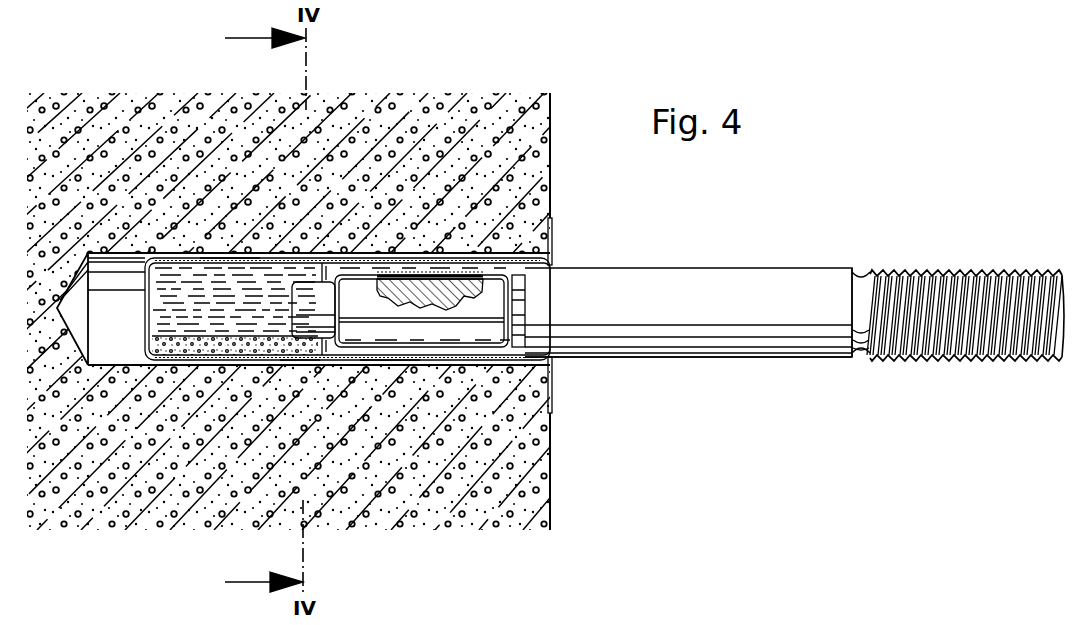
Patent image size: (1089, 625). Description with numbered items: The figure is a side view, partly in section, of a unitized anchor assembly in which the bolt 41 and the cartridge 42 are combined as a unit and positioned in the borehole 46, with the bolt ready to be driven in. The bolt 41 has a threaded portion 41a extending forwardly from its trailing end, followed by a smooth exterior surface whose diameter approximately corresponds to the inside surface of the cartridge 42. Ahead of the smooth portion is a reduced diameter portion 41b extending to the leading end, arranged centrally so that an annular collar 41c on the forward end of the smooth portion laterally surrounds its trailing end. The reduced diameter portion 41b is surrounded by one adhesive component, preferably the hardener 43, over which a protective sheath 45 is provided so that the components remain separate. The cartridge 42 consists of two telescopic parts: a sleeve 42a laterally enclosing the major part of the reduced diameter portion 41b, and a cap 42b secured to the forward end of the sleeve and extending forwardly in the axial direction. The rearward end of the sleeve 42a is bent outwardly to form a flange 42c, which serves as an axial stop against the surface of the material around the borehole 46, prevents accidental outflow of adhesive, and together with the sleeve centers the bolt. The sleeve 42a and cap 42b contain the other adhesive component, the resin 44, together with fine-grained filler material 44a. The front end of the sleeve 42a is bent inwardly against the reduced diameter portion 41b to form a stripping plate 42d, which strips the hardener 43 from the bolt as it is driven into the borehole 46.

The anchor bolt 41 is at (730, 266).
The threaded portion 41a is at (895, 358).
The reduced diameter portion 41b is at (307, 284).
The annular collar 41c is at (521, 290).
The cartridge 42 is at (331, 362).
The sleeve 42a is at (390, 362).
The cap 42b is at (231, 262).
The flange 42c is at (553, 396).
The stripping plate 42d is at (297, 342).
The hardener 43 is at (425, 282).
The resin 44 is at (171, 264).
The filler material 44a is at (195, 354).
The protective sheath 45 is at (470, 278).
The borehole 46 is at (124, 362).